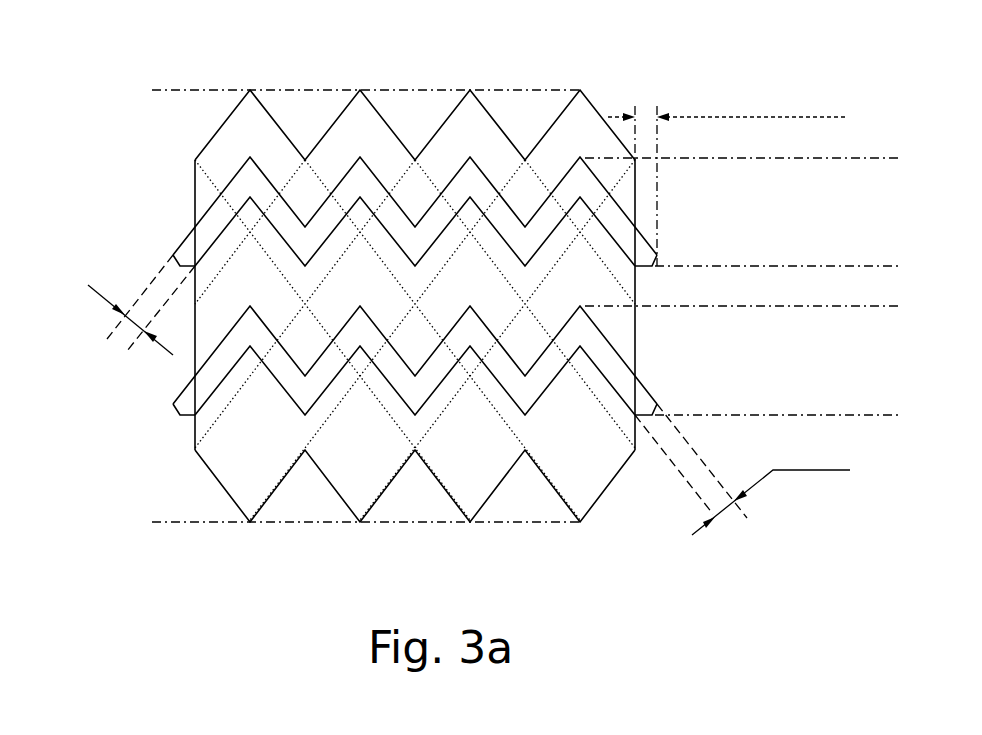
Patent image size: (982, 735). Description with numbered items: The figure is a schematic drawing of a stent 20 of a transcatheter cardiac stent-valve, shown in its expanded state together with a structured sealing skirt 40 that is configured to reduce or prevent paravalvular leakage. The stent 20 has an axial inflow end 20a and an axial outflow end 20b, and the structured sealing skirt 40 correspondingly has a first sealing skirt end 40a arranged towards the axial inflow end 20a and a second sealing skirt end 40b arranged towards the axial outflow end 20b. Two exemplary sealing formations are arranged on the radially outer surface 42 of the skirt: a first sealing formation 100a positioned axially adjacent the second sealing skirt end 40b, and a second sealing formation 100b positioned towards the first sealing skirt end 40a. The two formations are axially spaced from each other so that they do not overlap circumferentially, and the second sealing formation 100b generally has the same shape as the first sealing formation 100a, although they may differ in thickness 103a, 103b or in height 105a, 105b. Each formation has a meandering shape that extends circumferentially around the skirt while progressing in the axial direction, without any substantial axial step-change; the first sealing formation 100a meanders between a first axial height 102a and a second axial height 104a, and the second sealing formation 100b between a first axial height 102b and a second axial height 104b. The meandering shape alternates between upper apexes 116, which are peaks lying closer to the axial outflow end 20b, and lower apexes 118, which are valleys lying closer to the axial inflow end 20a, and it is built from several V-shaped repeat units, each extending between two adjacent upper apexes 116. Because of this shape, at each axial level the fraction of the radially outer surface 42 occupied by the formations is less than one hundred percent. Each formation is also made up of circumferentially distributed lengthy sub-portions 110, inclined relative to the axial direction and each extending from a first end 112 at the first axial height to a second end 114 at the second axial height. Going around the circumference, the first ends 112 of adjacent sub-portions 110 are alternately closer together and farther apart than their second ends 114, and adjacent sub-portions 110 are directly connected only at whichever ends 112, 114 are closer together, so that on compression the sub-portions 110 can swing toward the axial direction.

The stent 20 is at (487, 82).
The axial inflow end 20a is at (312, 522).
The axial outflow end 20b is at (314, 90).
The structured sealing skirt 40 is at (195, 203).
The first sealing skirt end 40a is at (312, 522).
The second sealing skirt end 40b is at (314, 90).
The radially outer surface 42 is at (195, 173).
The first sealing formation 100a is at (354, 310).
The second sealing formation 100b is at (164, 379).
The first axial height 102a is at (749, 177).
The first axial height 102b is at (749, 322).
The thickness 103a is at (88, 285).
The thickness 103b is at (744, 469).
The second axial height 104a is at (784, 253).
The second axial height 104b is at (784, 403).
The height 105a is at (726, 176).
The height 105b is at (726, 176).
The sub-portion 110 is at (429, 310).
The first end 112 is at (429, 132).
The second end 114 is at (429, 132).
The upper apex 116 is at (415, 250).
The lower apex 118 is at (429, 132).